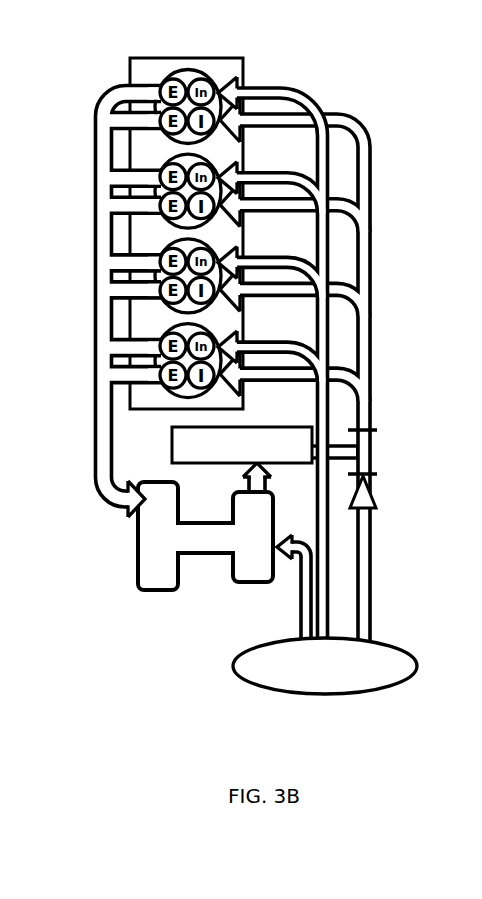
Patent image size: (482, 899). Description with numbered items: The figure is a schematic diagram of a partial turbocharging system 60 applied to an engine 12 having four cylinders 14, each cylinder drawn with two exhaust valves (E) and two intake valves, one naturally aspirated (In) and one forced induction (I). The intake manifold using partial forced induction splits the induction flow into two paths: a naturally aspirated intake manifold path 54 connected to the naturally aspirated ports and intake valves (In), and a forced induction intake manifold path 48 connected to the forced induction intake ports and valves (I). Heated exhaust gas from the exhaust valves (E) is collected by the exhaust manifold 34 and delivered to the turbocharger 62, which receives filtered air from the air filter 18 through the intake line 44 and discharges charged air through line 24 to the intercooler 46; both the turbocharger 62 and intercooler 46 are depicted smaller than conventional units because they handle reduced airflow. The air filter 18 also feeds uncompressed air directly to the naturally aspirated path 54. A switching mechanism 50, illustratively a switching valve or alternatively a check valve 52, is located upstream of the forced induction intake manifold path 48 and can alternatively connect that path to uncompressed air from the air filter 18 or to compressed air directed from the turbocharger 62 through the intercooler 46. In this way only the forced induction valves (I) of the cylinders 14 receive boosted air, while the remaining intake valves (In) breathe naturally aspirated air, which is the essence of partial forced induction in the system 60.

The engine 12 is at (130, 72).
The cylinder 14 is at (187, 70).
The air filter 18 is at (392, 643).
The line 24 is at (250, 470).
The exhaust manifold 34 is at (95, 278).
The intake passage 44 is at (302, 608).
The intercooler 46 is at (172, 445).
The forced induction intake manifold path 48 is at (370, 277).
The switching mechanism 50 is at (376, 430).
The check valve 52 is at (370, 490).
The naturally aspirated intake manifold path 54 is at (317, 105).
The partial turbocharging system 60 is at (445, 31).
The turbocharger 62 is at (140, 572).